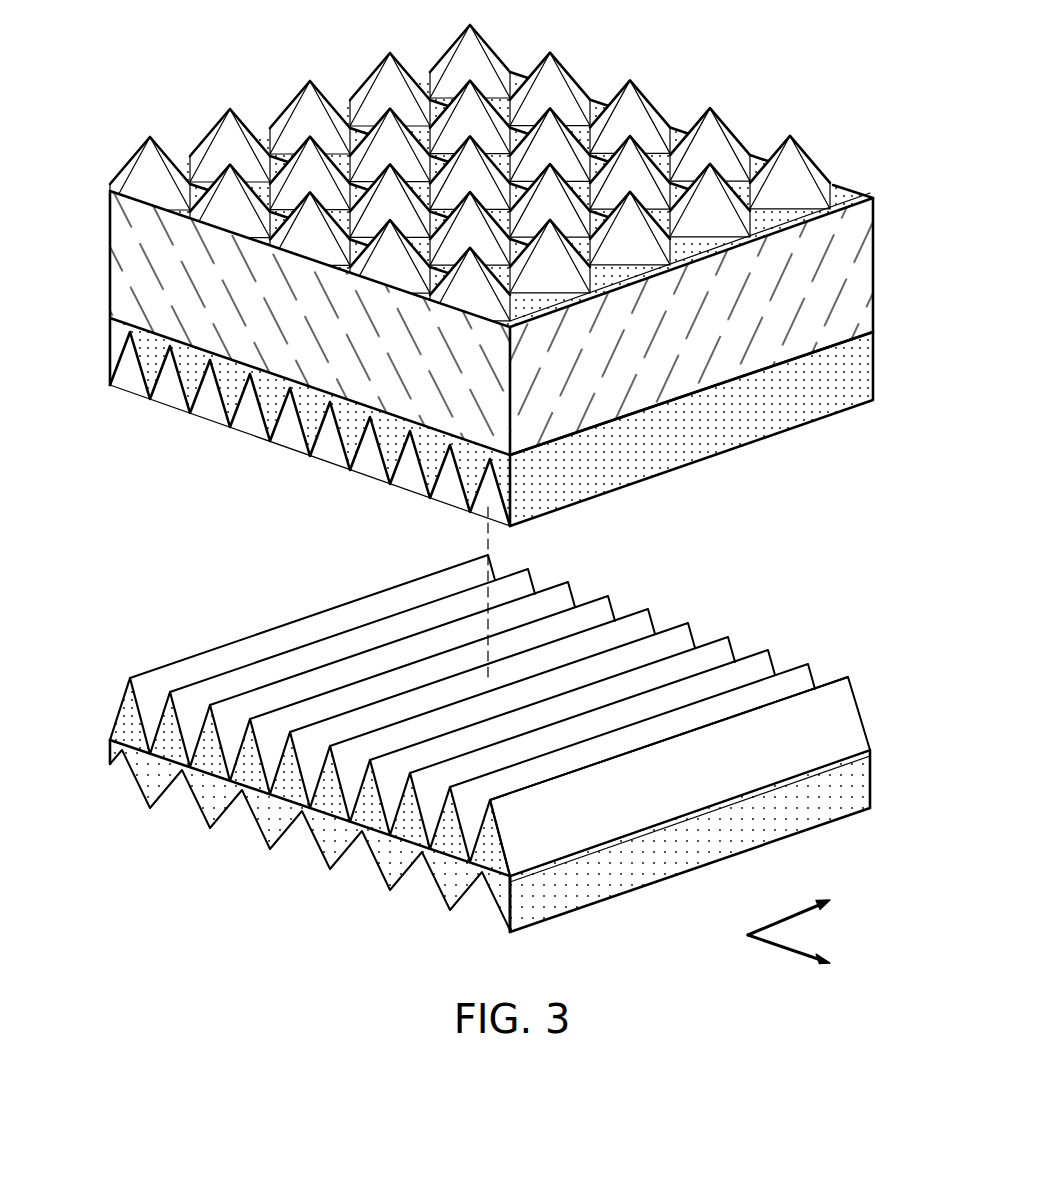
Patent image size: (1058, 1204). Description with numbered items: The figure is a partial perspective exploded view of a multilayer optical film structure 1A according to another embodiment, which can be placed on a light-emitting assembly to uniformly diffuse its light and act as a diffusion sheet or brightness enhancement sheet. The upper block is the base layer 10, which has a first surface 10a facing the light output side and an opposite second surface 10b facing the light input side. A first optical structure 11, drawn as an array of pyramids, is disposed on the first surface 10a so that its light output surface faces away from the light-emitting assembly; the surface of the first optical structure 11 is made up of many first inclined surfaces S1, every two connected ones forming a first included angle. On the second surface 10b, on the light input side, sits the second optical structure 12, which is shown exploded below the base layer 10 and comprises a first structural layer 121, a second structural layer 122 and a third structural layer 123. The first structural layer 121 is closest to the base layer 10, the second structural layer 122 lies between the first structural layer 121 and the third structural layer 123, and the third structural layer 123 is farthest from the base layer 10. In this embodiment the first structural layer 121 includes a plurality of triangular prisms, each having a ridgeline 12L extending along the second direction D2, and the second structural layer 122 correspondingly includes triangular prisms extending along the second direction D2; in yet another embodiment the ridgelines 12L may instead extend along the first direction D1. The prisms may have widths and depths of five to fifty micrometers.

The multilayer optical film structure 1A is at (499, 478).
The base layer 10 is at (490, 285).
The first surface 10a is at (134, 186).
The second surface 10b is at (276, 432).
The first optical structure 11 is at (500, 173).
The first inclined surface S1 is at (670, 111).
The second optical structure 12 is at (533, 632).
The first structural layer 121 is at (786, 408).
The second structural layer 122 is at (800, 666).
The third structural layer 123 is at (786, 790).
The ridgeline 12L is at (451, 500).
The first direction D1 is at (812, 960).
The second direction D2 is at (812, 912).